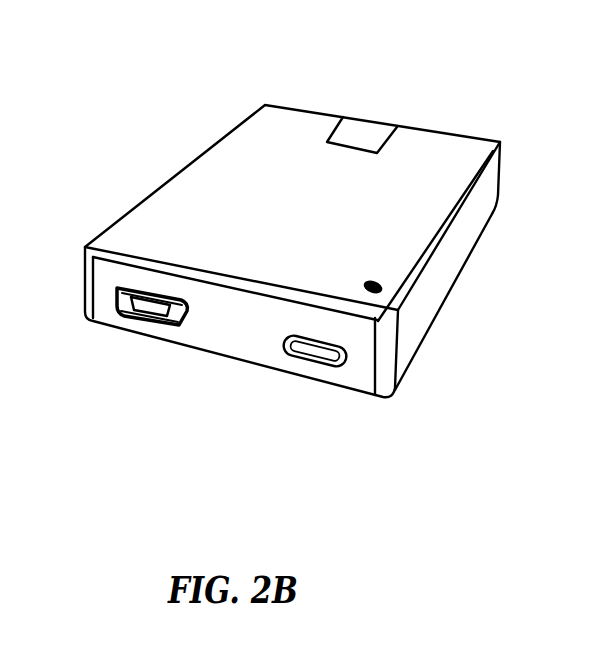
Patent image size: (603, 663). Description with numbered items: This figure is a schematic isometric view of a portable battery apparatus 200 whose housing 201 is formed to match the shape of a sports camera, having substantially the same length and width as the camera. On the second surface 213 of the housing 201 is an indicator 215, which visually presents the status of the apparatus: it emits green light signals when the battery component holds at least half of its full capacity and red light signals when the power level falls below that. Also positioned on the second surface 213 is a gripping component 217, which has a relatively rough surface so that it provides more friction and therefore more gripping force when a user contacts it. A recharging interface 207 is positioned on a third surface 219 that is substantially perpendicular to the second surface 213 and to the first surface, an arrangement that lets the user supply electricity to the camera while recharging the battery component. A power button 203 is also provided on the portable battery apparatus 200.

The portable battery apparatus 200 is at (221, 78).
The housing 201 is at (337, 247).
The power button 203 is at (346, 357).
The recharging interface 207 is at (173, 335).
The second surface 213 is at (277, 143).
The indicator 215 is at (381, 290).
The gripping component 217 is at (372, 140).
The third surface 219 is at (237, 342).